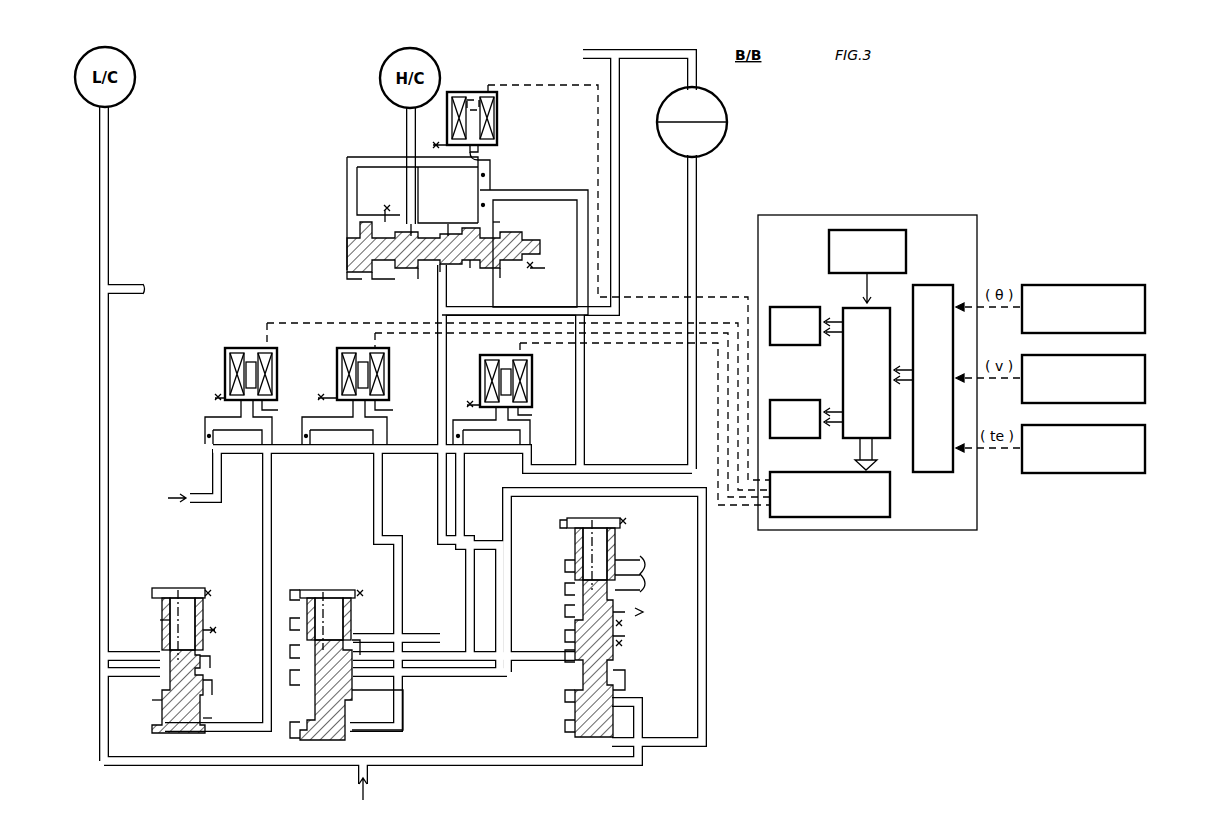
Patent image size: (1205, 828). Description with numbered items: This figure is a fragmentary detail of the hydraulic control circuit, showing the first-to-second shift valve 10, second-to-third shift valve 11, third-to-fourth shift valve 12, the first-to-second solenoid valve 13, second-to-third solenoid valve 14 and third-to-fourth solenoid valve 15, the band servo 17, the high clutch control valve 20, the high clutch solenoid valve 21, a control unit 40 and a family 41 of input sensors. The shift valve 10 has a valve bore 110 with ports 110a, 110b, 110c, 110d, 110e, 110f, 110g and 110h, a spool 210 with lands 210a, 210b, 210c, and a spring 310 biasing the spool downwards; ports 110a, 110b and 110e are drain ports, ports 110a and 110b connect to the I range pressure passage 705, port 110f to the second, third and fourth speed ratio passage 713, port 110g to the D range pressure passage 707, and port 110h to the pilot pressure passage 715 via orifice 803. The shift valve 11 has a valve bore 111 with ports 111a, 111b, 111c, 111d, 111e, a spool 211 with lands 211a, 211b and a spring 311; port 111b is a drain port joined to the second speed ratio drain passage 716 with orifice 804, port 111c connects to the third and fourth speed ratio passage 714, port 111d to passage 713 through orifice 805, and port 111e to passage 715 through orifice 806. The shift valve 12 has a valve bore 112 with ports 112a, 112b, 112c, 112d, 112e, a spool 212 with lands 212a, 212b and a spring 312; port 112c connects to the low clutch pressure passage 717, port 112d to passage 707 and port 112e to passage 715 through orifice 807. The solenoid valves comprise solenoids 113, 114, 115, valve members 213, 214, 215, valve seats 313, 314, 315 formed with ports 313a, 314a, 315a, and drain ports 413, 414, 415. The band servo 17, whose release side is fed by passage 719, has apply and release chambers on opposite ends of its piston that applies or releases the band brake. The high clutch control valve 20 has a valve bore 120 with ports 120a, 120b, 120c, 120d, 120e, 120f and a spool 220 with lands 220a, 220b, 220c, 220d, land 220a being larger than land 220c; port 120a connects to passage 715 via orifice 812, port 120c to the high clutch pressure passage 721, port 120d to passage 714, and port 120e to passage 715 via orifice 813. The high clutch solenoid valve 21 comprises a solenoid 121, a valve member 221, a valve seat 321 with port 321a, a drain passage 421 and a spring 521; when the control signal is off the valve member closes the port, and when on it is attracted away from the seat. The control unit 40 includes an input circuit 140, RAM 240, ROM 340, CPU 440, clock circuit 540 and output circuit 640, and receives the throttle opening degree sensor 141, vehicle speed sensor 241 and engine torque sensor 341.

The 1-2 shift valve 10 is at (601, 632).
The 2-3 shift valve 11 is at (335, 644).
The 3-4 shift valve 12 is at (183, 644).
The 1-2 solenoid valve 13 is at (490, 372).
The 2-3 solenoid valve 14 is at (363, 363).
The 3-4 solenoid valve 15 is at (251, 363).
The band servo 17 is at (727, 119).
The high clutch control valve 20 is at (442, 236).
The high clutch solenoid valve 21 is at (472, 103).
The control unit 40 is at (867, 357).
The family of input sensors 41 is at (1104, 367).
The valve bore 110 is at (615, 535).
The port 110a is at (560, 524).
The port 110b is at (565, 566).
The port 110c is at (565, 588).
The port 110d is at (565, 610).
The port 110e is at (565, 636).
The port 110f is at (565, 656).
The port 110g is at (565, 696).
The port 110h is at (565, 726).
The valve bore 111 is at (322, 598).
The port 111a is at (292, 592).
The port 111b is at (292, 622).
The port 111c is at (292, 650).
The port 111d is at (292, 676).
The port 111e is at (292, 728).
The valve bore 112 is at (162, 598).
The port 112a is at (212, 592).
The port 112b is at (218, 630).
The port 112c is at (208, 660).
The port 112d is at (210, 682).
The port 112e is at (205, 722).
The solenoid 113 is at (528, 365).
The solenoid 114 is at (385, 360).
The solenoid 115 is at (230, 360).
The valve bore 120 is at (498, 278).
The port 120a is at (355, 278).
The port 120b is at (385, 278).
The port 120c is at (418, 279).
The port 120d is at (442, 272).
The port 120e is at (500, 222).
The port 120f is at (535, 266).
The solenoid 121 is at (488, 104).
The input circuit 140 is at (945, 472).
The throttle opening degree sensor 141 is at (1145, 300).
The spool 210 is at (590, 737).
The land 210a is at (622, 614).
The land 210b is at (622, 638).
The land 210c is at (620, 706).
The spool 211 is at (330, 740).
The land 211a is at (356, 650).
The land 211b is at (352, 700).
The spool 212 is at (178, 733).
The land 212a is at (160, 625).
The land 212b is at (160, 702).
The valve member 213 is at (507, 378).
The valve member 214 is at (364, 374).
The valve member 215 is at (250, 372).
The spool 220 is at (347, 256).
The land 220a is at (374, 214).
The land 220b is at (412, 228).
The land 220c is at (448, 230).
The land 220d is at (475, 266).
The valve member 221 is at (478, 120).
The RAM 240 is at (790, 307).
The vehicle speed sensor 241 is at (1145, 370).
The spring 310 is at (578, 540).
The spring 311 is at (330, 596).
The spring 312 is at (178, 600).
The valve seat 313 is at (530, 410).
The port 313a is at (505, 414).
The valve seat 314 is at (384, 404).
The port 314a is at (388, 412).
The valve seat 315 is at (230, 403).
The port 315a is at (278, 412).
The valve seat 321 is at (497, 150).
The port 321a is at (490, 163).
The ROM 340 is at (790, 400).
The engine torque sensor 341 is at (1145, 440).
The drain port 413 is at (465, 400).
The drain port 414 is at (314, 395).
The drain port 415 is at (212, 392).
The drain passage 421 is at (430, 146).
The CPU 440 is at (843, 352).
The spring 521 is at (472, 100).
The clock circuit 540 is at (906, 243).
The output circuit 640 is at (790, 472).
The I range pressure passage 705 is at (650, 572).
The D range pressure passage 707 is at (415, 766).
The 2nd, 3rd and 4th speed ratio pressure passage 713 is at (503, 575).
The 3rd and 4th speed ratio passage 714 is at (437, 497).
The pilot pressure passage 715 is at (493, 463).
The 2nd speed ratio drain passage 716 is at (412, 620).
The low clutch pressure passage 717 is at (108, 240).
The hydraulic fluid passage 719 is at (620, 178).
The high clutch pressure passage 721 is at (404, 128).
The orifice 803 is at (462, 470).
The orifice 804 is at (440, 653).
The orifice 805 is at (395, 678).
The orifice 806 is at (272, 444).
The orifice 807 is at (212, 442).
The orifice 812 is at (486, 176).
The orifice 813 is at (486, 205).